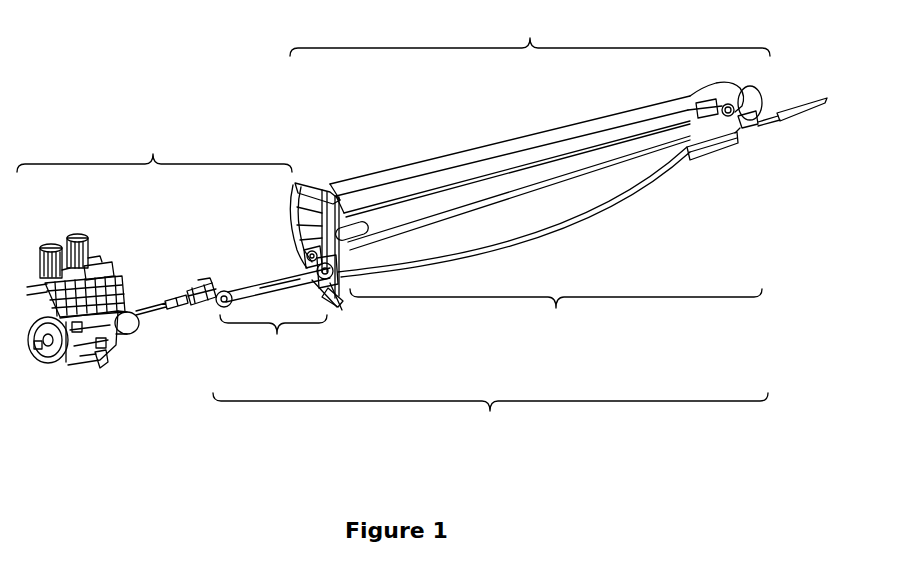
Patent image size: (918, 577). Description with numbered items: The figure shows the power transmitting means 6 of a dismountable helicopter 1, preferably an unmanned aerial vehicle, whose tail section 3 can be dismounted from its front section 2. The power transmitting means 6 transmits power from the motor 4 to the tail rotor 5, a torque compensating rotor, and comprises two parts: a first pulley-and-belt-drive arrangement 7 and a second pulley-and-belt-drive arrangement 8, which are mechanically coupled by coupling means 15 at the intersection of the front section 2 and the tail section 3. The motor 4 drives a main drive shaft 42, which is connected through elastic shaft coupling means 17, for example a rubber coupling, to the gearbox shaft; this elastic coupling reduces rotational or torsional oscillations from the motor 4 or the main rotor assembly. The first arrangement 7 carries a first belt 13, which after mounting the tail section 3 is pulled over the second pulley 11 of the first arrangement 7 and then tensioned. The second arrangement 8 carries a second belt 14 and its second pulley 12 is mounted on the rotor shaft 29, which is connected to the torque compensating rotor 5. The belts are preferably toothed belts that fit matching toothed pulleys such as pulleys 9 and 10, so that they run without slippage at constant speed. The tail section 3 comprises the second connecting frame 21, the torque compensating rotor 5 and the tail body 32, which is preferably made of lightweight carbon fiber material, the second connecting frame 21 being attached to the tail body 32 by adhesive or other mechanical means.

The dismountable helicopter 1 is at (121, 42).
The front section 2 is at (154, 144).
The tail section 3 is at (530, 35).
The motor 4 is at (86, 262).
The tail rotor 5 is at (716, 148).
The power transmitting means 6 is at (490, 419).
The first pulley-and-belt-drive arrangement 7 is at (273, 341).
The second pulley-and-belt-drive arrangement 8 is at (556, 316).
The toothed pulley 9 is at (224, 306).
The toothed pulley 10 is at (305, 252).
The second pulley of the first pulley-and-belt-drive arrangement 11 is at (336, 269).
The second pulley of the second pulley-and-belt-drive arrangement 12 is at (732, 94).
The first belt 13 is at (246, 282).
The second belt 14 is at (463, 182).
The coupling means 15 is at (324, 302).
The elastic shaft coupling means 17 is at (197, 284).
The second connecting frame 21 is at (306, 182).
The rotor shaft 29 is at (752, 92).
The tail body 32 is at (364, 172).
The main drive shaft 42 is at (174, 299).